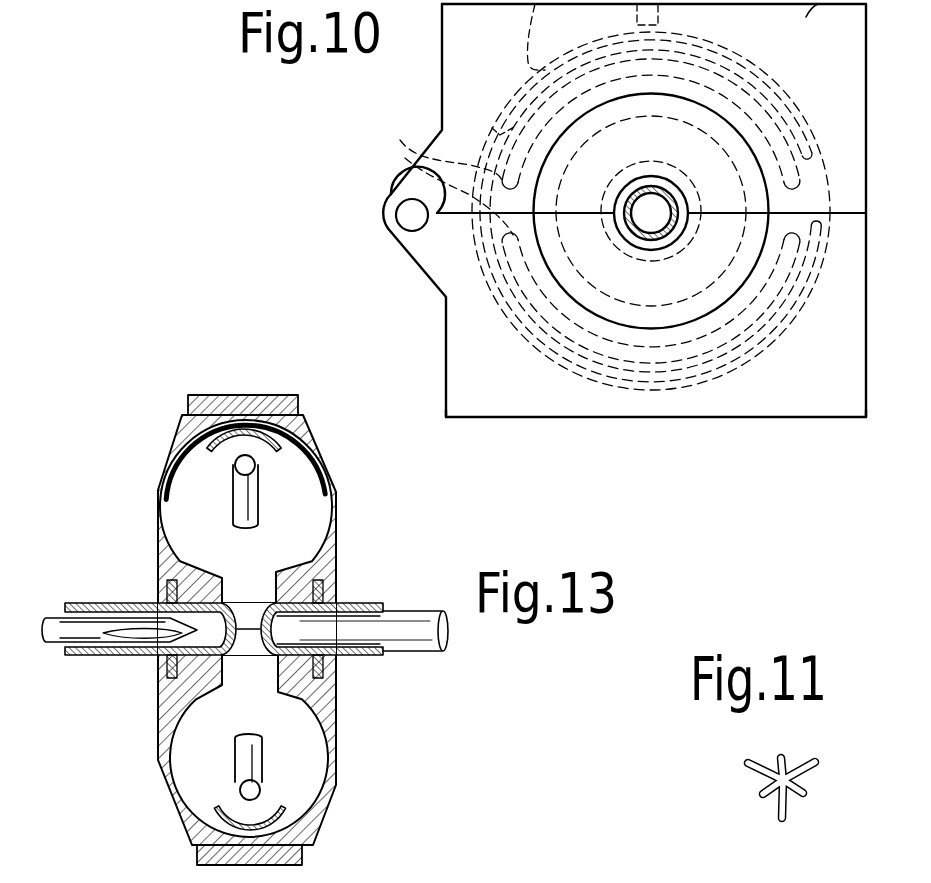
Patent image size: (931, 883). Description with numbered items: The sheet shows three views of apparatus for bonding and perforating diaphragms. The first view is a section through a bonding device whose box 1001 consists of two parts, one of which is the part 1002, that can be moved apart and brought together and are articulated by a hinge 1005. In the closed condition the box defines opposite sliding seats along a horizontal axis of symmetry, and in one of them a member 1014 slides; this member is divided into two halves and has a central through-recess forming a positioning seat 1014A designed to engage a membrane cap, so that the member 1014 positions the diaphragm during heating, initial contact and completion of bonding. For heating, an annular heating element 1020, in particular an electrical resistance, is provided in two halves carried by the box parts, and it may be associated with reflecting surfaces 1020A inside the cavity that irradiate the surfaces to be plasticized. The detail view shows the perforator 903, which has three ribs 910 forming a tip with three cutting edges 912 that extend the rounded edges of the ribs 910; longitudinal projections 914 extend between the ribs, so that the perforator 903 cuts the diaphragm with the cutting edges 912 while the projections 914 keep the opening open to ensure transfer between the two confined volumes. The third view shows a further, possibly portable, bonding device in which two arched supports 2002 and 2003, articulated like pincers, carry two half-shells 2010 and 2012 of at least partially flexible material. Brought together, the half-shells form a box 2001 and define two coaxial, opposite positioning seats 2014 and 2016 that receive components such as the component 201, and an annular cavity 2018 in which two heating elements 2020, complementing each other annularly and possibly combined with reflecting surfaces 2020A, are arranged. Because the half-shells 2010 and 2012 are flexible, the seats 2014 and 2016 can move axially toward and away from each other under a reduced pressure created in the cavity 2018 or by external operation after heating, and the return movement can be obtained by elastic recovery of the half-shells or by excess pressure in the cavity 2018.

In FIG. 10, the box 1001 is at (780, 422).
In FIG. 10, the part of box 1002 is at (835, 408).
In FIG. 10, the hinge 1005 is at (410, 222).
In FIG. 10, the annular heating element 1020 is at (450, 119).
In FIG. 10, the reflecting surfaces 1020A is at (595, 375).
In FIG. 10, the positioning member 1014 is at (664, 328).
In FIG. 10, the positioning seat 1014A is at (668, 238).
In FIG. 10, the component 201 is at (622, 236).
In FIG. 13, the box 2001 is at (163, 432).
In FIG. 13, the arched support 2002 is at (238, 397).
In FIG. 13, the arched support 2003 is at (287, 870).
In FIG. 13, the half-shell 2010 is at (334, 490).
In FIG. 13, the half-shell 2012 is at (337, 797).
In FIG. 13, the positioning seat 2014 is at (168, 562).
In FIG. 13, the positioning seat 2016 is at (330, 598).
In FIG. 13, the annular cavity 2018 is at (203, 520).
In FIG. 13, the heating elements 2020 is at (236, 465).
In FIG. 13, the reflecting surfaces 2020A is at (277, 450).
In FIG. 13, the perforator 903 is at (84, 642).
In FIG. 11, the perforator 903 is at (752, 746).
In FIG. 13, the ribs 910 is at (90, 626).
In FIG. 11, the ribs 910 is at (770, 770).
In FIG. 13, the cutting edges 912 is at (190, 694).
In FIG. 11, the cutting edges 912 is at (766, 798).
In FIG. 13, the longitudinal projections 914 is at (150, 658).
In FIG. 11, the longitudinal projections 914 is at (800, 775).